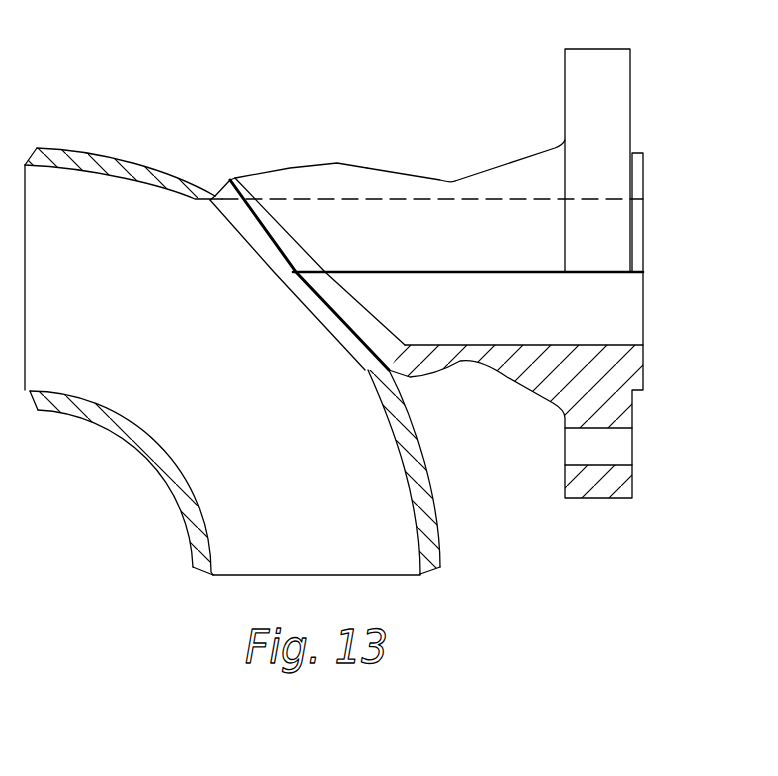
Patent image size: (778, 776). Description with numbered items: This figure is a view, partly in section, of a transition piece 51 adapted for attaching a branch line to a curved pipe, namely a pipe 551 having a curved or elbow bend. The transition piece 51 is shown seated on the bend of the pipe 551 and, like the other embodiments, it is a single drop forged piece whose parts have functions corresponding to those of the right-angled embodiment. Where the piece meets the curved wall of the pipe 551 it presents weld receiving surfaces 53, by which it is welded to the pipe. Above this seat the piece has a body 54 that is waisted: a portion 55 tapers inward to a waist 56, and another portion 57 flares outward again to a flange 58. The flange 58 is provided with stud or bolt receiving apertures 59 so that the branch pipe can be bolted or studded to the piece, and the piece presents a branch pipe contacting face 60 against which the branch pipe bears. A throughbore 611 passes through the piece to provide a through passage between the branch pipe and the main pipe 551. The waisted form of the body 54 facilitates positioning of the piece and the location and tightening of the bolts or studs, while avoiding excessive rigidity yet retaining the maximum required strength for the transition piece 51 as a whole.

The transition piece 51 is at (457, 117).
The weld receiving surfaces 53 is at (217, 186).
The body 54 is at (505, 380).
The tapering portion 55 is at (370, 165).
The waist 56 is at (452, 181).
The flaring portion 57 is at (528, 176).
The flange 58 is at (588, 72).
The stud or bolt receiving apertures 59 is at (615, 452).
The branch pipe contacting face 60 is at (647, 232).
The throughbore 611 is at (602, 320).
The pipe 551 is at (187, 535).